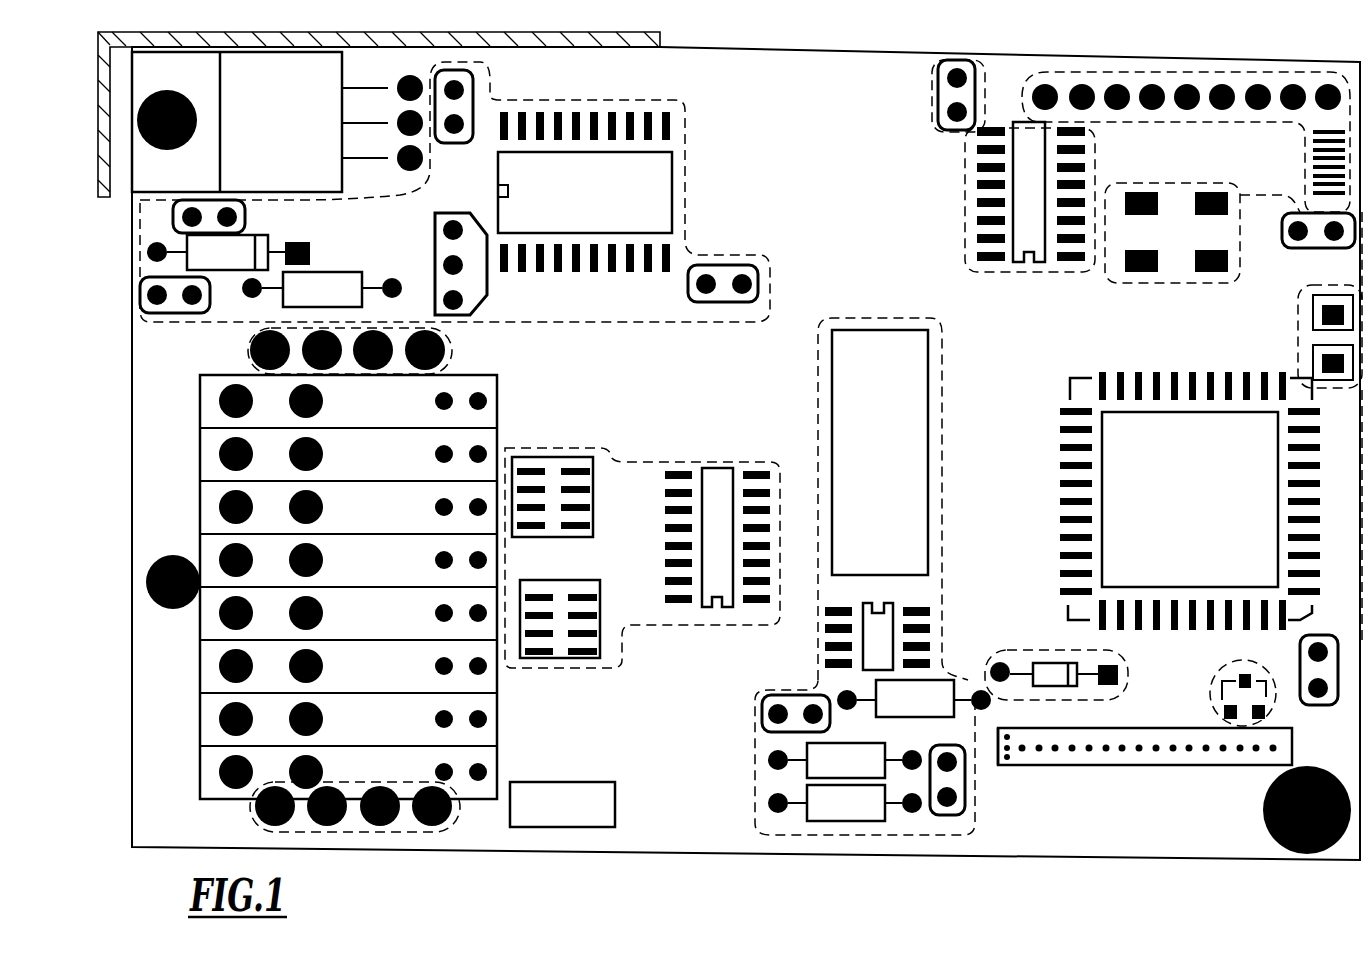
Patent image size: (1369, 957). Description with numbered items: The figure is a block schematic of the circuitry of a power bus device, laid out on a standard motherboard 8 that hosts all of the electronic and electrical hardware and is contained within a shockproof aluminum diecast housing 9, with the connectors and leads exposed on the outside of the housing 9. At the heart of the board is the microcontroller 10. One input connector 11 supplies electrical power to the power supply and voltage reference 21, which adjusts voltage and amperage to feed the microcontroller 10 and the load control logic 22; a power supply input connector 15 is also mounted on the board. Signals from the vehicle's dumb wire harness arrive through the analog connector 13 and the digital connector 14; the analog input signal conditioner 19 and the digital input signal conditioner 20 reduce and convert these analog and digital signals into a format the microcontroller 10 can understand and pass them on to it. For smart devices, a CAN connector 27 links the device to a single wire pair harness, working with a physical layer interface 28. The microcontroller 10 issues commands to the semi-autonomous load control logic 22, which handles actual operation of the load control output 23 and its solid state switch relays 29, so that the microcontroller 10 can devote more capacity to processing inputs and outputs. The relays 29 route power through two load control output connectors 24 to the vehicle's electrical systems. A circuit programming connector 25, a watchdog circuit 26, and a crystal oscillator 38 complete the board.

The motherboard 8 is at (736, 55).
The housing 9 is at (508, 35).
The microcontroller 10 is at (1190, 501).
The input connector 11 is at (158, 566).
The analog connector 13 is at (1145, 767).
The digital connector 14 is at (1230, 80).
The power supply input connector 15 is at (296, 134).
The analog input signal conditioner 19 is at (1222, 686).
The digital input signal conditioner 20 is at (965, 190).
The power supply and voltage reference 21 is at (685, 186).
The load control logic 22 is at (712, 452).
The load control output 23 is at (497, 404).
The load control output connector 24 is at (250, 352).
The circuit programming connector 25 is at (1012, 768).
The watchdog circuit 26 is at (1062, 655).
The CAN connector 27 is at (616, 804).
The physical layer interface 28 is at (944, 384).
The solid state switch relay 29 is at (202, 400).
The crystal oscillator 38 is at (1170, 280).